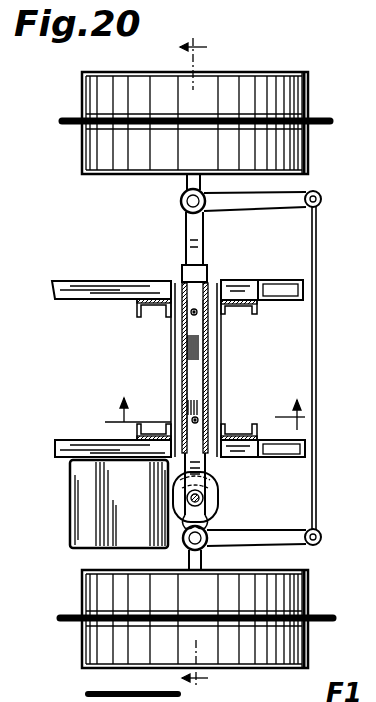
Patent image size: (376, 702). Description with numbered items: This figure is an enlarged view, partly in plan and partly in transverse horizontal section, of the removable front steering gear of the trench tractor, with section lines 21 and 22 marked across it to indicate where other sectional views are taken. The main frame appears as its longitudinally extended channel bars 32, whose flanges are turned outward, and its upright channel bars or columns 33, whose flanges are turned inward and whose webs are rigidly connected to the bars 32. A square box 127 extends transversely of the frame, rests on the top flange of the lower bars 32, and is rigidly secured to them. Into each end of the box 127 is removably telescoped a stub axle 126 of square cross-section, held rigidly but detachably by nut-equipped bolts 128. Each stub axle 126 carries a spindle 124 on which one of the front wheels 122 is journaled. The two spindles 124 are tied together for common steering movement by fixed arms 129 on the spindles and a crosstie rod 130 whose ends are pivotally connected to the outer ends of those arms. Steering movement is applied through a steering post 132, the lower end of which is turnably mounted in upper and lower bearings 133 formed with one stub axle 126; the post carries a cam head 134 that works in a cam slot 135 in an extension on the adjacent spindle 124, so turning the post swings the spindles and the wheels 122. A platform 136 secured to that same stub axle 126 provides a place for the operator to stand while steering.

The section line 21— 21 is at (204, 362).
The section line 22— 22 is at (201, 420).
The longitudinally extended channel bars 32 is at (108, 298).
The upright channel bars or columns 33 is at (148, 318).
The front wheels 122 is at (290, 78).
The spindles 124 is at (203, 188).
The stub axles 126 is at (192, 333).
The square box 127 is at (200, 362).
The nut-equipped bolts 128 is at (197, 310).
The fixed arms 129 is at (248, 200).
The crosstie rod 130 is at (317, 372).
The steering post 132 is at (180, 517).
The bearings 133 is at (199, 219).
The cam head 134 is at (182, 494).
The cam slot 135 is at (212, 503).
The platform 136 is at (85, 496).